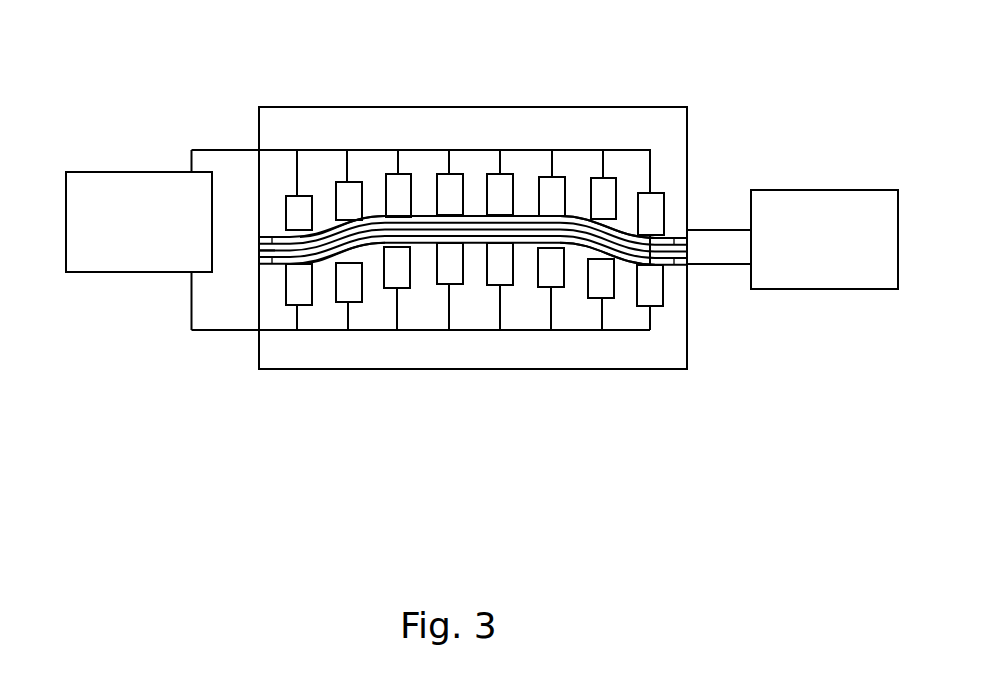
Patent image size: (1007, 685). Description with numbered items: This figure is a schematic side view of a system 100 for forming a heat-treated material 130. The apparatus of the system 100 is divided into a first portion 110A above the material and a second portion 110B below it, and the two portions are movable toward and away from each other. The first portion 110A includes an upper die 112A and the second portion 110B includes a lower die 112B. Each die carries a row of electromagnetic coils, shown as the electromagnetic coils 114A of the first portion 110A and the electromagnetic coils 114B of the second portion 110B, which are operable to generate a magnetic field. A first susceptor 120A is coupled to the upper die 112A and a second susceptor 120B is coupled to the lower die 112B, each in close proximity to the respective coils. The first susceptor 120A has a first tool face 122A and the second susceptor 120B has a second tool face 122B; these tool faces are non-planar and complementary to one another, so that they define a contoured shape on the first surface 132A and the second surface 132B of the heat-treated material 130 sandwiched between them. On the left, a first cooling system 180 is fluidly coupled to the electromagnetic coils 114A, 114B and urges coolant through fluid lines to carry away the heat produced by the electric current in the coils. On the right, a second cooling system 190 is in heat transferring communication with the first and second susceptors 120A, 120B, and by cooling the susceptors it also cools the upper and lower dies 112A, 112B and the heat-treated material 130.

The system 100 is at (690, 47).
The first portion 110A is at (693, 125).
The second portion 110B is at (693, 326).
The upper die 112A is at (680, 172).
The lower die 112B is at (272, 331).
The electromagnetic coils 114A is at (342, 192).
The electromagnetic coils 114B is at (342, 287).
The first susceptor 120A is at (275, 236).
The second susceptor 120B is at (275, 262).
The first tool face 122A is at (378, 232).
The second tool face 122B is at (478, 238).
The heat-treated material 130 is at (254, 252).
The first surface 132A is at (572, 230).
The second surface 132B is at (574, 248).
The first cooling system 180 is at (95, 168).
The second cooling system 190 is at (862, 184).